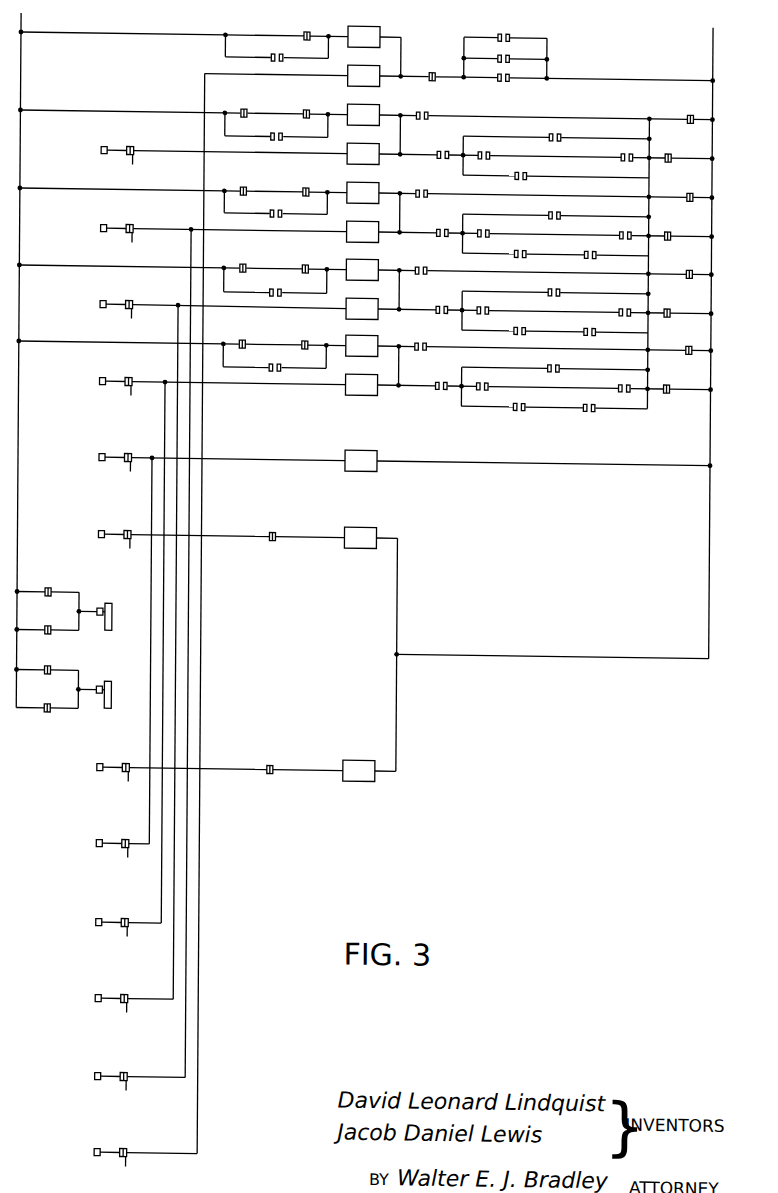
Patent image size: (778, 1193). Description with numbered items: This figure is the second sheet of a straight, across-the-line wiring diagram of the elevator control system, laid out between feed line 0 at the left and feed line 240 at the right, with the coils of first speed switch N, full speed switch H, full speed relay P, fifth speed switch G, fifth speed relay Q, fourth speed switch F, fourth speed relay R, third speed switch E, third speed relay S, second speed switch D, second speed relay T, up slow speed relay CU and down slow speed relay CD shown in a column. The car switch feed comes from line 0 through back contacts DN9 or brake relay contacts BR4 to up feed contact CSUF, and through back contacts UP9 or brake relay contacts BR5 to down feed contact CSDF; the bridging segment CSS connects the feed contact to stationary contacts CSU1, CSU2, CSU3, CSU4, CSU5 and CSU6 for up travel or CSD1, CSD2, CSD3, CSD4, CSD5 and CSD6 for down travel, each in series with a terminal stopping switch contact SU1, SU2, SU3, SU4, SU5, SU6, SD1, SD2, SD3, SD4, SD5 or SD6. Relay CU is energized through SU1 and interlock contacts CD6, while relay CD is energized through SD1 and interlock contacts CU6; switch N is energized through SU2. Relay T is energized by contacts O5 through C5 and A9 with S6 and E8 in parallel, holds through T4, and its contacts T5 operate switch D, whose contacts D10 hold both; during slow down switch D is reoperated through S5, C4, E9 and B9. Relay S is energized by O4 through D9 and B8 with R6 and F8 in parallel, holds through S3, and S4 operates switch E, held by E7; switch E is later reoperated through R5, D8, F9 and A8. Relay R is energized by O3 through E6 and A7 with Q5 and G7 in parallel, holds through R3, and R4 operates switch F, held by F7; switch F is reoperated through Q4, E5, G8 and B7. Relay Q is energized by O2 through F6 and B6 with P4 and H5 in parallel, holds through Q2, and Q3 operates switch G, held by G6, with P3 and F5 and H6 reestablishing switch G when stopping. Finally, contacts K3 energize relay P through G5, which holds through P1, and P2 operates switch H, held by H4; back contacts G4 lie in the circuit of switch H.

The feed line 0 is at (19, 354).
The feed line 240 is at (709, 334).
The full speed switch H is at (364, 36).
The full speed relay P is at (364, 75).
The fifth speed switch G is at (363, 114).
The fifth speed relay Q is at (363, 153).
The fourth speed switch F is at (363, 192).
The fourth speed relay R is at (363, 231).
The third speed switch E is at (362, 269).
The third speed relay S is at (362, 308).
The second speed switch D is at (362, 345).
The second speed relay T is at (361, 384).
The first speed switch N is at (361, 460).
The up slow speed relay CU is at (360, 537).
The down slow speed relay CD is at (359, 770).
The contacts of fifth speed switch G4 is at (308, 28).
The contacts of full speed relay P2 is at (283, 44).
The contacts of voltage relay K3 is at (434, 67).
The contacts of full speed relay P1 is at (505, 27).
The contacts of full speed switch H4 is at (505, 48).
The contacts of fifth speed switch G5 is at (505, 67).
The contacts of full speed relay P3 is at (245, 106).
The contacts of fourth speed switch F5 is at (308, 106).
The contacts of fifth speed relay Q3 is at (278, 129).
The contacts of fifth speed switch G6 is at (424, 106).
The contacts of full speed switch H5 is at (677, 110).
The contacts of voltage relay O2 is at (443, 145).
The contacts of fifth speed relay Q2 is at (557, 126).
The contacts of fourth speed switch F6 is at (486, 145).
The contacts of generator field control switch B6 is at (627, 145).
The contacts of full speed relay P4 is at (670, 145).
The contacts of full speed switch H6 is at (523, 165).
The contacts of fifth speed relay Q4 is at (245, 184).
The contacts of third speed switch E5 is at (308, 184).
The contacts of fourth speed relay R4 is at (278, 206).
The contacts of fourth speed switch F7 is at (424, 184).
The contacts of fifth speed switch G7 is at (689, 184).
The contacts of voltage relay O3 is at (443, 223).
The contacts of fourth speed relay R3 is at (562, 198).
The contacts of third speed switch E6 is at (486, 223).
The contacts of generator field control switch A7 is at (626, 223).
The contacts of fifth speed relay Q5 is at (670, 223).
The contacts of fifth speed switch G8 is at (523, 243).
The contacts of generator field control switch B7 is at (593, 251).
The contacts of fourth speed relay R5 is at (245, 261).
The contacts of second speed switch D8 is at (308, 261).
The contacts of third speed relay S4 is at (283, 279).
The contacts of third speed switch E7 is at (424, 261).
The contacts of fourth speed switch F8 is at (689, 261).
The contacts of voltage relay O4 is at (443, 300).
The contacts of third speed relay S3 is at (562, 275).
The contacts of second speed switch D9 is at (486, 300).
The contacts of generator field control switch B8 is at (626, 300).
The contacts of fourth speed relay R6 is at (670, 300).
The contacts of fourth speed switch F9 is at (523, 320).
The contacts of generator field control switch A8 is at (593, 328).
The contacts of third speed relay S5 is at (245, 337).
The contacts of slow speed switch C4 is at (308, 337).
The contacts of second speed relay T5 is at (283, 354).
The contacts of second speed switch D10 is at (424, 337).
The contacts of third speed switch E8 is at (689, 337).
The contacts of voltage relay O5 is at (443, 376).
The contacts of second speed relay T4 is at (562, 351).
The contacts of slow speed switch C5 is at (486, 376).
The contacts of generator field control switch A9 is at (626, 376).
The contacts of third speed relay S6 is at (670, 376).
The contacts of third speed switch E9 is at (523, 396).
The contacts of generator field control switch B9 is at (593, 404).
The contacts of down slow speed relay CD6 is at (277, 529).
The contacts of up slow speed relay CU6 is at (276, 762).
The stationary contact of car switch CSU1 is at (102, 530).
The stationary contact of car switch CSU2 is at (102, 453).
The stationary contact of car switch CSU3 is at (102, 377).
The stationary contact of car switch CSU4 is at (102, 300).
The stationary contact of car switch CSU5 is at (102, 224).
The stationary contact of car switch CSU6 is at (102, 146).
The contacts of terminal stopping switch SU1 is at (130, 529).
The contacts of terminal stopping switch SU2 is at (130, 452).
The contacts of terminal stopping switch SU3 is at (130, 376).
The contacts of terminal stopping switch SU4 is at (130, 299).
The contacts of terminal stopping switch SU5 is at (130, 223).
The contacts of terminal stopping switch SU6 is at (130, 145).
The stationary contact of car switch CSD1 is at (102, 763).
The stationary contact of car switch CSD2 is at (102, 839).
The stationary contact of car switch CSD3 is at (102, 918).
The stationary contact of car switch CSD4 is at (102, 994).
The stationary contact of car switch CSD5 is at (102, 1072).
The stationary contact of car switch CSD6 is at (102, 1148).
The contacts of terminal stopping switch SD1 is at (130, 762).
The contacts of terminal stopping switch SD2 is at (130, 838).
The contacts of terminal stopping switch SD3 is at (130, 917).
The contacts of terminal stopping switch SD4 is at (130, 993).
The contacts of terminal stopping switch SD5 is at (130, 1071).
The contacts of terminal stopping switch SD6 is at (130, 1147).
The contacts of down direction switch DN9 is at (53, 587).
The contacts of brake relay BR4 is at (58, 619).
The car switch up feed contact CSUF is at (103, 606).
The bridging segment of car switch CSS is at (116, 614).
The contacts of up direction switch UP9 is at (53, 665).
The contacts of brake relay BR5 is at (58, 697).
The car switch down feed contact CSDF is at (103, 684).